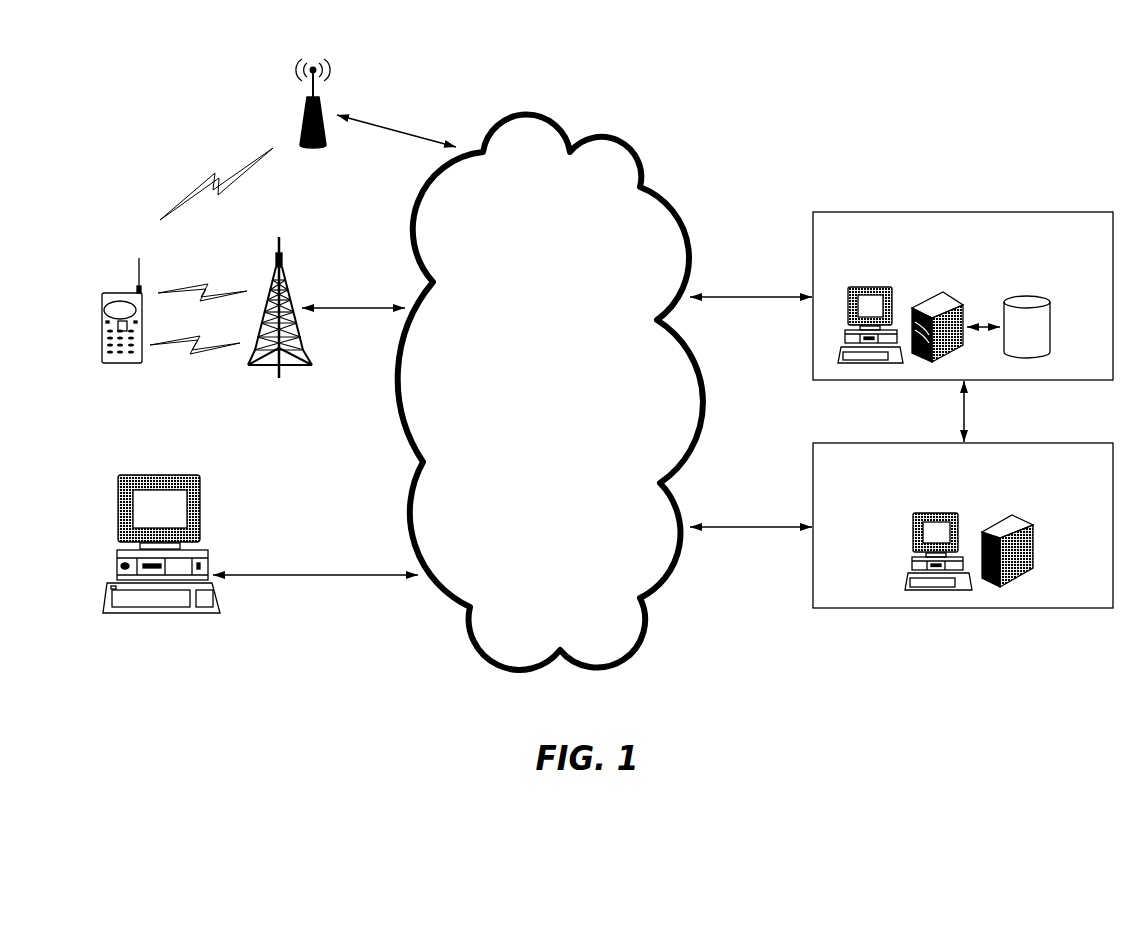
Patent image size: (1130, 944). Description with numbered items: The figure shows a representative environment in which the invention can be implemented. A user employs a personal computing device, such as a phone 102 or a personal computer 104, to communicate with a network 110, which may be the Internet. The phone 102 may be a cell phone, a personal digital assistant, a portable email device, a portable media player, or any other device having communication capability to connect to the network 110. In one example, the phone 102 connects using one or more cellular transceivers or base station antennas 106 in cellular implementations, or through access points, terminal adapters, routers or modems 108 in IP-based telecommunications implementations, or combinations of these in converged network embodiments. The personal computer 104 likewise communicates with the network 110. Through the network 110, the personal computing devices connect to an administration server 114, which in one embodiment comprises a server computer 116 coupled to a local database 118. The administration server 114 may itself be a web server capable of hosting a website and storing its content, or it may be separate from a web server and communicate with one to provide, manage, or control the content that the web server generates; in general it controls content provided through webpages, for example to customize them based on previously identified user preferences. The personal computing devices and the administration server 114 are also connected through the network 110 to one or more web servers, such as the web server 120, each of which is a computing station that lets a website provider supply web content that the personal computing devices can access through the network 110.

The phone 102 is at (145, 268).
The personal computer 104 is at (177, 463).
The base station antennas 106 is at (300, 275).
The modems 108 is at (328, 64).
The network 110 is at (550, 392).
The administration server 114 is at (963, 284).
The server computer 116 is at (868, 284).
The local database 118 is at (1033, 291).
The web server 120 is at (963, 512).